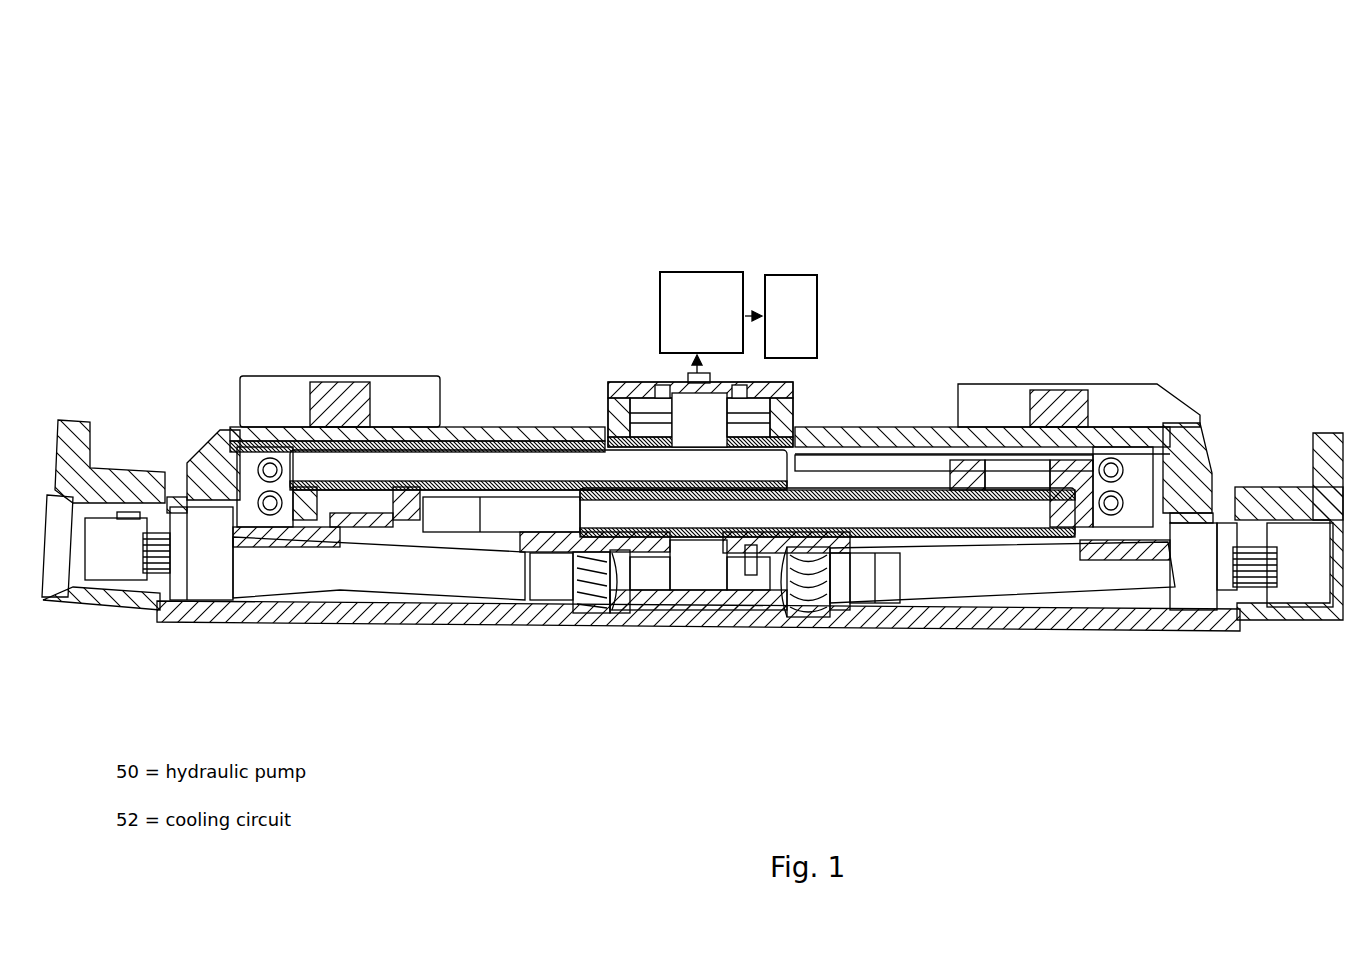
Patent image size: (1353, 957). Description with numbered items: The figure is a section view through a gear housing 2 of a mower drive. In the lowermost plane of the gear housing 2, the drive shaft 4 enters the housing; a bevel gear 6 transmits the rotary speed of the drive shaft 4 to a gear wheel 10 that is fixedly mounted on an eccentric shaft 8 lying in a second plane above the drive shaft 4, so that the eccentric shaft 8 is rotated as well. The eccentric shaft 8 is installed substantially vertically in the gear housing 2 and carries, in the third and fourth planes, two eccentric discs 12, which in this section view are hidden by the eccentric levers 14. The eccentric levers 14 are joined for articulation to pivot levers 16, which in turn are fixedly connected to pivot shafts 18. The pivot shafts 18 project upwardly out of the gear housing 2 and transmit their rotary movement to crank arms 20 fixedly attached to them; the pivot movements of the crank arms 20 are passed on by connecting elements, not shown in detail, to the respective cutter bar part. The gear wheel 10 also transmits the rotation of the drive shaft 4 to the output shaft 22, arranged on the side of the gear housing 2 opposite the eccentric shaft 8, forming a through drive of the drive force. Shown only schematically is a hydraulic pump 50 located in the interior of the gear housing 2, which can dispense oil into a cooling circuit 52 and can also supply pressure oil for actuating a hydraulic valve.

The gear housing 2 is at (482, 136).
The drive shaft 4 is at (963, 577).
The bevel gear 6 is at (588, 585).
The eccentric shaft 8 is at (698, 570).
The gear wheel 10 is at (750, 540).
The eccentric discs 12 is at (680, 490).
The eccentric levers 14 is at (527, 465).
The pivot levers 16 is at (327, 415).
The pivot shafts 18 is at (342, 400).
The crank arms 20 is at (412, 405).
The output shaft 22 is at (347, 570).
The hydraulic pump 50 is at (720, 331).
The cooling circuit 52 is at (810, 334).